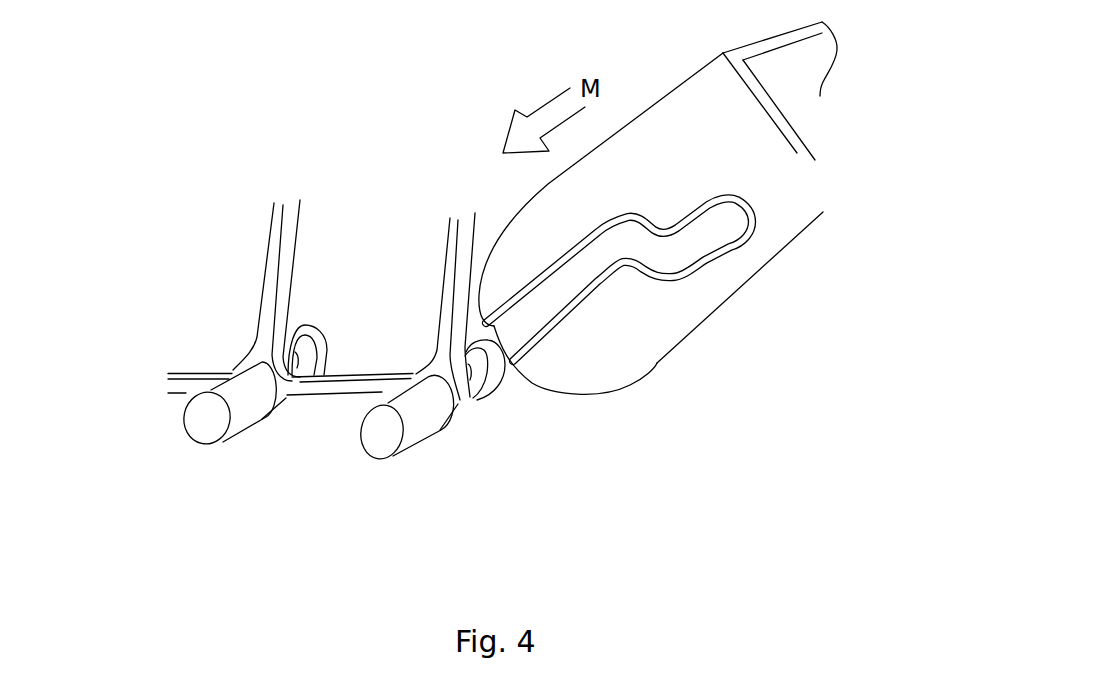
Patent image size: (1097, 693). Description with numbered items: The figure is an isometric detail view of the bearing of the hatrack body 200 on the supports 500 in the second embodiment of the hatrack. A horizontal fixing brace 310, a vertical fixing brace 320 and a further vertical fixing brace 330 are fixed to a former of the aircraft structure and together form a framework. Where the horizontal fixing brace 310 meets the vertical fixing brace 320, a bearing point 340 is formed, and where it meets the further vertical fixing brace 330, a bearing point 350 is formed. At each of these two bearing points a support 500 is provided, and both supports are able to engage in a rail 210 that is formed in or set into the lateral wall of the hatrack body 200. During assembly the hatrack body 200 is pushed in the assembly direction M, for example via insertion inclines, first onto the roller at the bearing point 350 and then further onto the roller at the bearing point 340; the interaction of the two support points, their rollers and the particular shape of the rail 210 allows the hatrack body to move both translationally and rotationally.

The hatrack body 200 is at (747, 170).
The rail 210 is at (582, 274).
The horizontal fixing brace 310 is at (186, 392).
The vertical fixing brace 320 is at (268, 268).
The further vertical fixing brace 330 is at (448, 262).
The bearing point 340 is at (287, 398).
The bearing point 350 is at (460, 402).
The support 500 is at (227, 357).